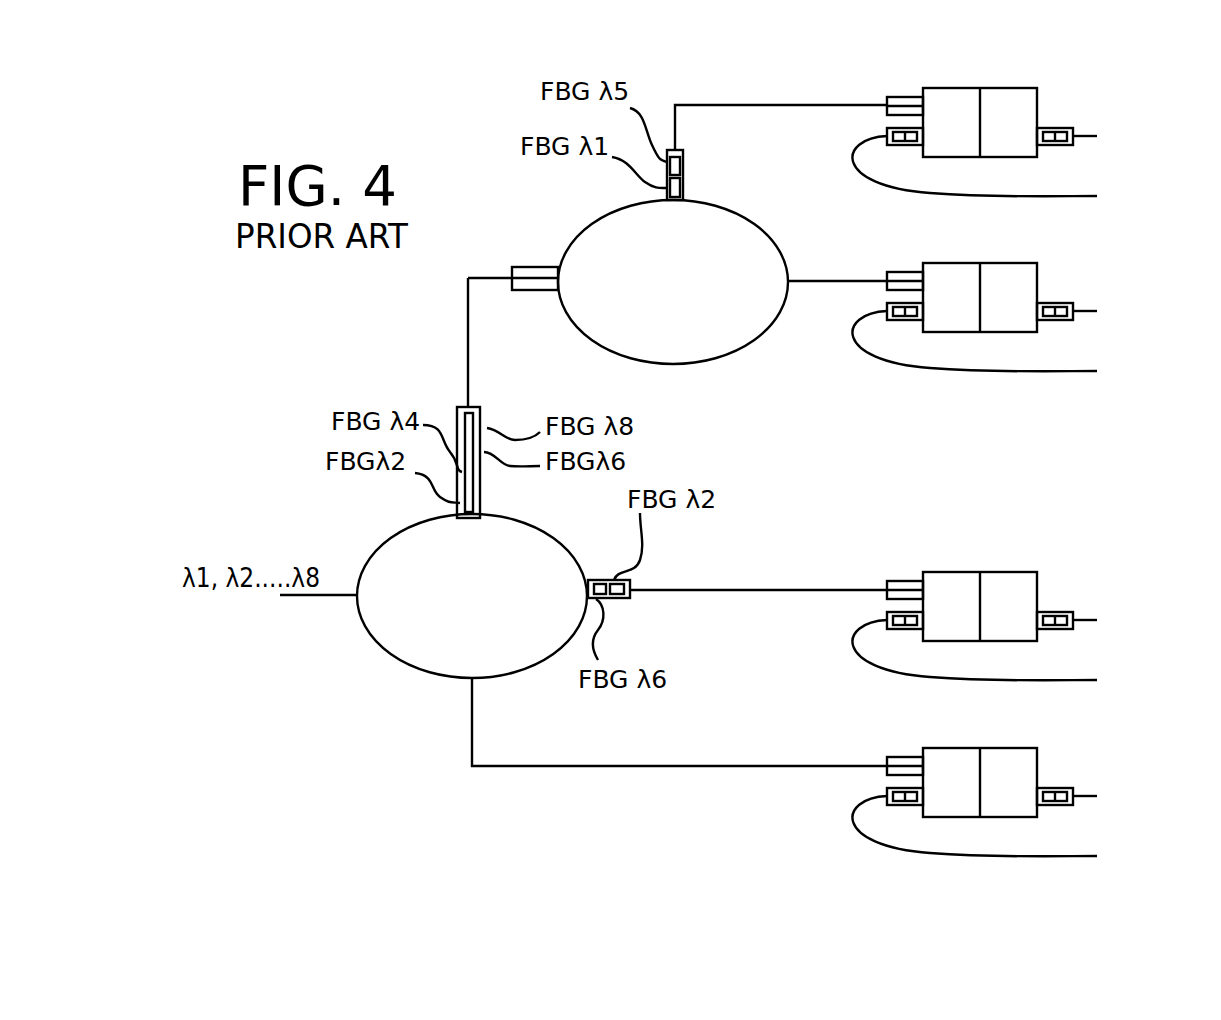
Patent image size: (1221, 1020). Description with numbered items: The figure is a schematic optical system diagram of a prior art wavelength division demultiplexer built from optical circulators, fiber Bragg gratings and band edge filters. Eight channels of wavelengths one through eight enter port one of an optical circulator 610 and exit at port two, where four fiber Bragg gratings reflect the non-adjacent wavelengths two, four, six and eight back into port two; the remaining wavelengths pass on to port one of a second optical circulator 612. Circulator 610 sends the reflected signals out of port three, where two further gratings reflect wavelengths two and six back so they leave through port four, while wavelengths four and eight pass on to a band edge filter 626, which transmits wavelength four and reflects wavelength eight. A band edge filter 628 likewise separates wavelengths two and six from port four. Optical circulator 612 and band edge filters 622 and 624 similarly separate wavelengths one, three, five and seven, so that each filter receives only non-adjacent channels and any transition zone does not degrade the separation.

The optical circulator 610 is at (380, 547).
The second optical circulator 612 is at (580, 229).
The band edge filter 622 is at (1044, 76).
The band edge filter 624 is at (1050, 264).
The band edge filter 626 is at (1032, 560).
The band edge filter 628 is at (1086, 766).